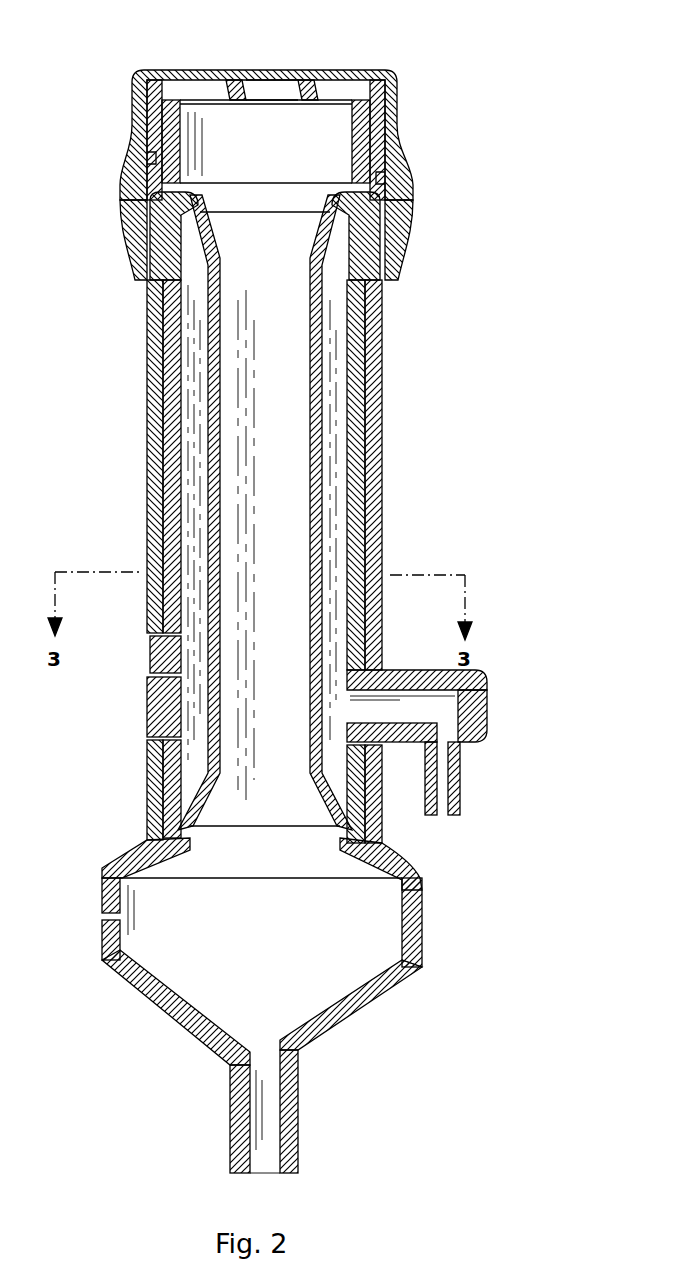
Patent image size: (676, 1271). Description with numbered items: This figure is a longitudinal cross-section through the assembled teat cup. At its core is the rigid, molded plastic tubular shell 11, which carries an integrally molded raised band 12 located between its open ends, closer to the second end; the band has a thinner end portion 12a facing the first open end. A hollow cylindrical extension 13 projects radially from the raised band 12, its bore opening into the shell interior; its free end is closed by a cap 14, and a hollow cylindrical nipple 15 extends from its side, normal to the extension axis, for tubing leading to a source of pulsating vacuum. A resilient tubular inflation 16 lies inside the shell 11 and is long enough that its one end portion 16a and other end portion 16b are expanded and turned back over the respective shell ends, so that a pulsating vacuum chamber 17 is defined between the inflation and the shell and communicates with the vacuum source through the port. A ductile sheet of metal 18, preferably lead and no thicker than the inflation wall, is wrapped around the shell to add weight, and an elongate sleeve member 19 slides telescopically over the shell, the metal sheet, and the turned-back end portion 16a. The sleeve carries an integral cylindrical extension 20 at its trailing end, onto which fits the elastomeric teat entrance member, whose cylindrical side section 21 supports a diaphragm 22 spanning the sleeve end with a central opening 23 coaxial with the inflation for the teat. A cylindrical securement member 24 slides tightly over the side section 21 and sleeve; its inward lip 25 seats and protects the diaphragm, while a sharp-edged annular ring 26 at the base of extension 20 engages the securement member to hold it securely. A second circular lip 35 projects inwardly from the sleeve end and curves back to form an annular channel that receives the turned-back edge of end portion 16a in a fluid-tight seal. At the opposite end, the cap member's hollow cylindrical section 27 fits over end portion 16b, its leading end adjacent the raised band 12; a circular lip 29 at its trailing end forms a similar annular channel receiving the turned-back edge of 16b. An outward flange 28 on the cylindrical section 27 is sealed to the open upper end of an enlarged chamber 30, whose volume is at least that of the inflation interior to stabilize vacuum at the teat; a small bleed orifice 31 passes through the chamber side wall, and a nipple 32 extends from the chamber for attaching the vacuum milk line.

The tubular shell 11 is at (326, 484).
The raised band 12 is at (152, 690).
The end portion of the raised band having the smaller thickness 12a is at (160, 650).
The cylindrical extension 13 is at (405, 685).
The cap 14 is at (480, 706).
The cylindrical nipple 15 is at (452, 770).
The tubular inflation 16 is at (212, 420).
The one end portion of the inflation 16a is at (165, 250).
The other end portion of the inflation 16b is at (152, 800).
The pulsating vacuum chamber 17 is at (192, 470).
The sheet of metal 18 is at (165, 340).
The elongate sleeve member 19 is at (152, 378).
The cylindrical extension 20 is at (186, 108).
The cylindrical side section 21 is at (150, 125).
The diaphragm 22 is at (226, 82).
The central opening 23 is at (272, 92).
The securement member 24 is at (398, 118).
The lip 25 is at (178, 72).
The annular ring 26 is at (148, 162).
The cylindrical section 27 is at (152, 756).
The flange 28 is at (115, 851).
The circular lip 29 is at (340, 848).
The enlarged chamber 30 is at (122, 962).
The bleed orifice 31 is at (100, 914).
The nipple 32 is at (290, 1135).
The second circular lip 35 is at (310, 200).